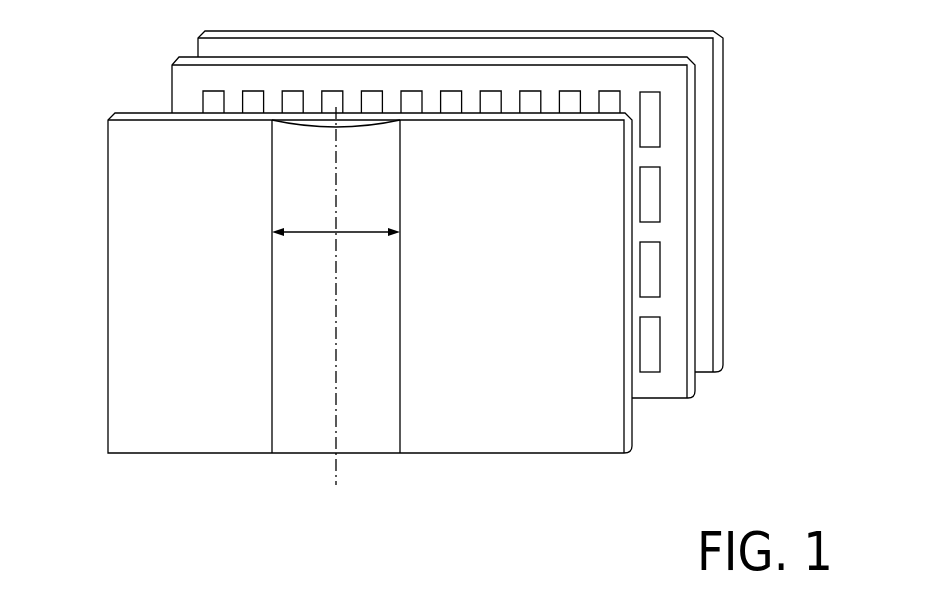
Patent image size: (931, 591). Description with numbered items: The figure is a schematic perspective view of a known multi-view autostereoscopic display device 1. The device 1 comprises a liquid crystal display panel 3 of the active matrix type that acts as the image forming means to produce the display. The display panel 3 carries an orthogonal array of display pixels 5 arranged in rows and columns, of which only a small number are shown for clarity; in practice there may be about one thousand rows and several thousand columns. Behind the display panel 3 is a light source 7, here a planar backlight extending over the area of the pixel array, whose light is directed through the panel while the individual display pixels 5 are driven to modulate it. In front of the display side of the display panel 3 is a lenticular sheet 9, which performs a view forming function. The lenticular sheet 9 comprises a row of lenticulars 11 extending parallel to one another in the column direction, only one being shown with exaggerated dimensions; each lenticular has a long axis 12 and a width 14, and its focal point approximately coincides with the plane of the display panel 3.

The multi-view autostereoscopic display device 1 is at (96, 80).
The liquid crystal display panel 3 is at (692, 386).
The display pixels 5 is at (655, 137).
The light source 7 is at (722, 352).
The lenticular sheet 9 is at (630, 437).
The lenticulars 11 is at (377, 443).
The long axis 12 is at (331, 470).
The width 14 is at (336, 218).